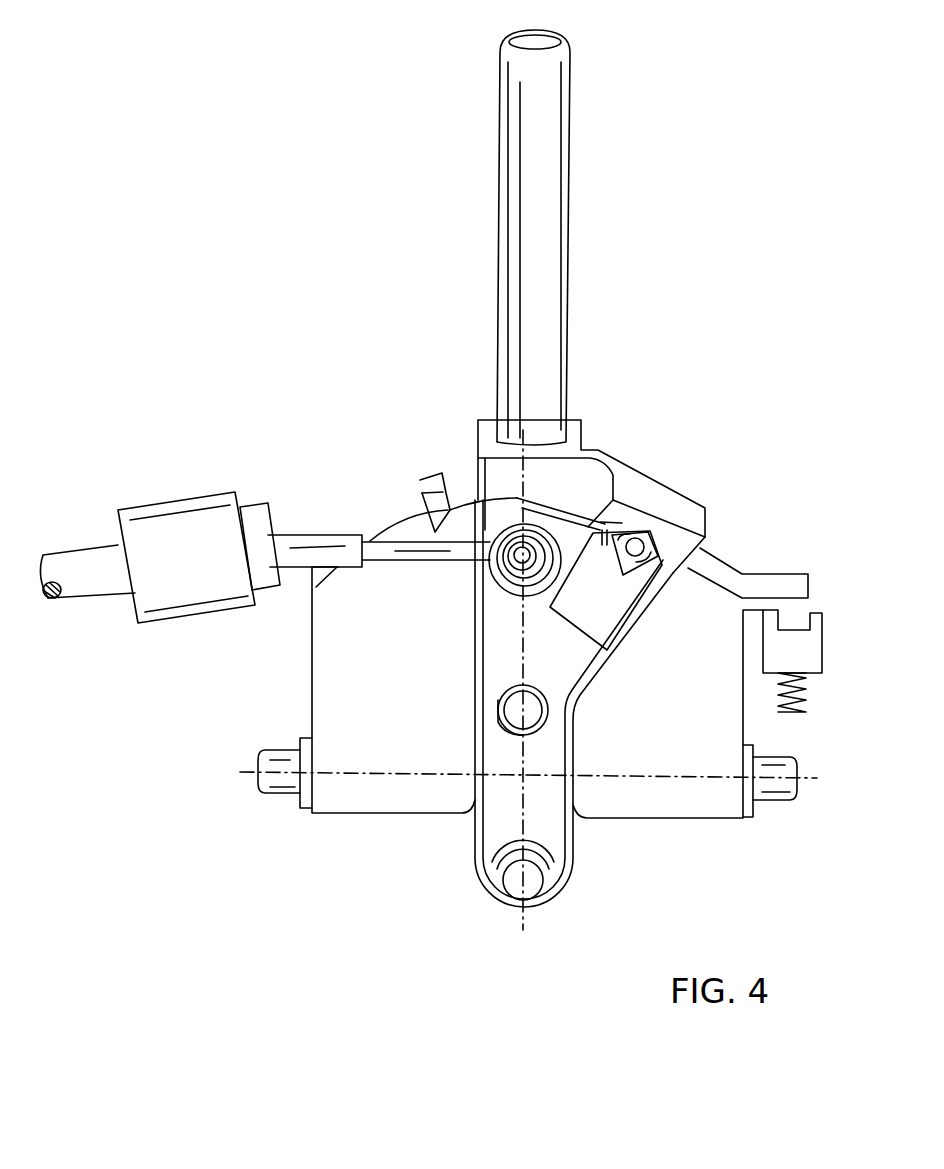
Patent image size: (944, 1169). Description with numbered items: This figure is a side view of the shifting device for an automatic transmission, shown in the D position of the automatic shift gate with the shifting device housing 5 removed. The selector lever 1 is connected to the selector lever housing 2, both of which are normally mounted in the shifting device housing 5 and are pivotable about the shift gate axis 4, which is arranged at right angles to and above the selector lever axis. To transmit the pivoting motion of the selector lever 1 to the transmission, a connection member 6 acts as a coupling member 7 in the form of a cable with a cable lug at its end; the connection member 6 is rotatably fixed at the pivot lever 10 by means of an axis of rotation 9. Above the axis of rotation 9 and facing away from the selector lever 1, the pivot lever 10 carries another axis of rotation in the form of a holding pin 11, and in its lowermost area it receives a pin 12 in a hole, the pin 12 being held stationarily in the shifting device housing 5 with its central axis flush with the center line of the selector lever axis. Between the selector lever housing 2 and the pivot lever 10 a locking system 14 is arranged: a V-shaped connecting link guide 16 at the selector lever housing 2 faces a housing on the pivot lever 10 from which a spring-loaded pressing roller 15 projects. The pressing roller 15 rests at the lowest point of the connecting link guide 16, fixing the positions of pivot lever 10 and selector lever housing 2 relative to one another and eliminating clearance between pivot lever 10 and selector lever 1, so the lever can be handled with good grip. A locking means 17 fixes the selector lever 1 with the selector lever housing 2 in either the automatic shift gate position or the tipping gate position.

The selector lever 1 is at (537, 237).
The selector lever housing 2 is at (582, 478).
The shift gate axis 4 is at (273, 777).
The shifting device housing 5 is at (680, 797).
The connection member 6 is at (514, 548).
The coupling member 7 is at (342, 535).
The axis of rotation 9 is at (500, 540).
The pivot lever 10 is at (557, 660).
The holding pin 11 is at (523, 717).
The pin 12 is at (515, 878).
The locking system 14 is at (667, 595).
The pressing roller 15 is at (648, 530).
The connecting link guide 16 is at (622, 523).
The locking means 17 is at (817, 605).